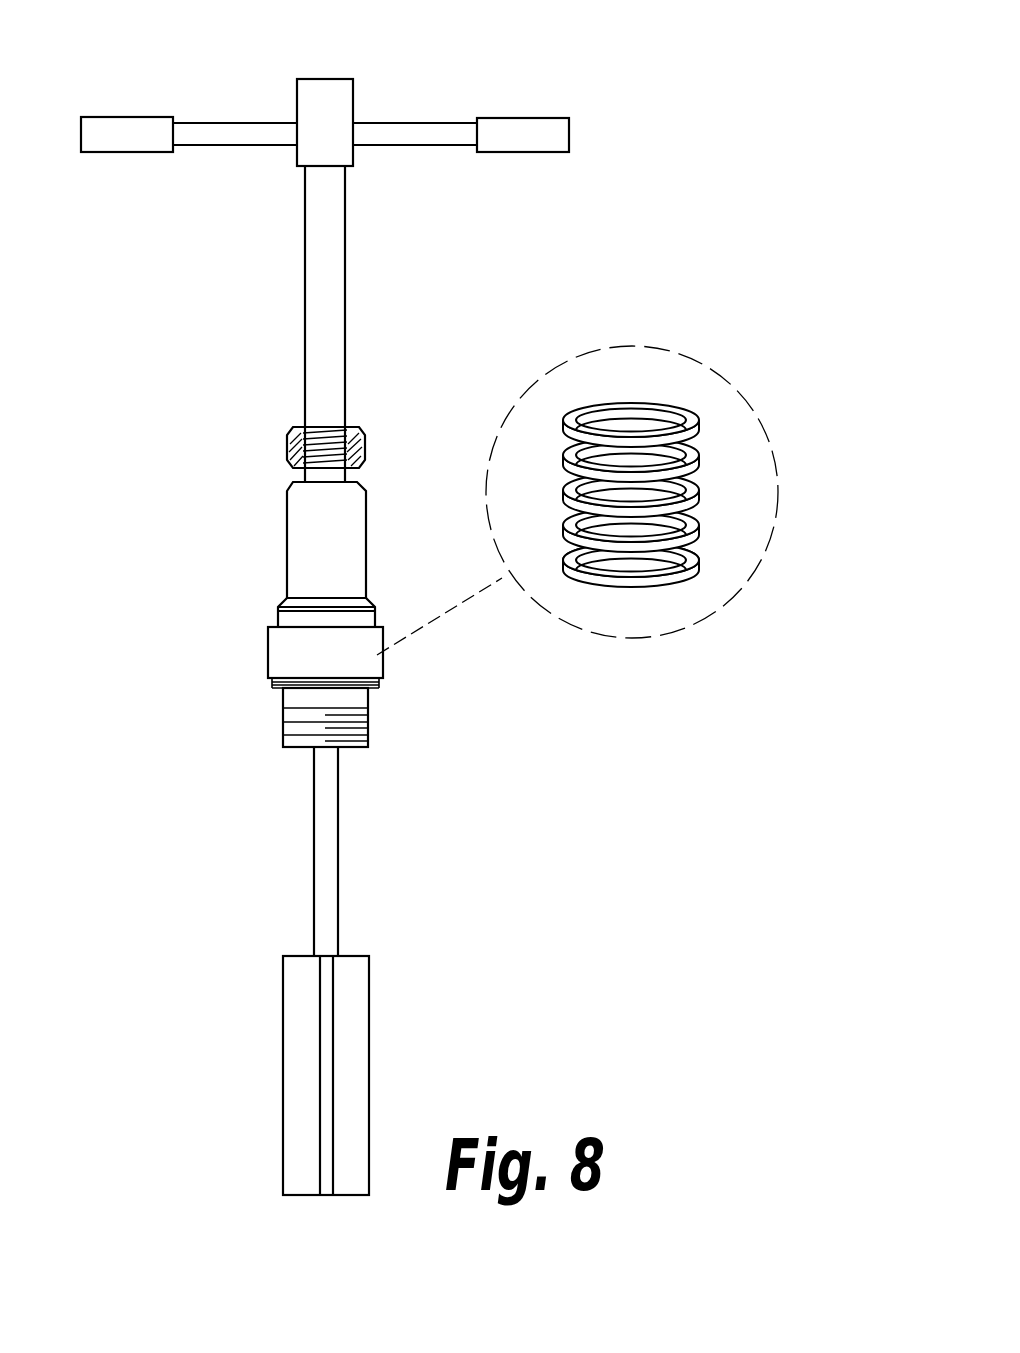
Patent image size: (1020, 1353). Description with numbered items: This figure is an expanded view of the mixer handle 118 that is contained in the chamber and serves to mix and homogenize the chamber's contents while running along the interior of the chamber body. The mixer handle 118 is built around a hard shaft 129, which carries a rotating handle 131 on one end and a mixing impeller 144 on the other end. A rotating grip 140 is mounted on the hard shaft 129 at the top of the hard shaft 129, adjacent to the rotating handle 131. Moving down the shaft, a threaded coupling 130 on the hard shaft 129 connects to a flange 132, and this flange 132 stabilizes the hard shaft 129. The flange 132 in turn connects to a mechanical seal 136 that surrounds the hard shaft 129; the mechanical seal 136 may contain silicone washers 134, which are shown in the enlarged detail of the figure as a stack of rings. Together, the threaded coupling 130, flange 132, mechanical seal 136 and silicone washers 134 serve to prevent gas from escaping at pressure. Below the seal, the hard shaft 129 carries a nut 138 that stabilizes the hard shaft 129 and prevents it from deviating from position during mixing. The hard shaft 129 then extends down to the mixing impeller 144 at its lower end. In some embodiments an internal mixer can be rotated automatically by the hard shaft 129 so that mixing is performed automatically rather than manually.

The mixer handle 118 is at (327, 79).
The rotating handle 131 is at (406, 127).
The rotating grip 140 is at (569, 136).
The hard shaft 129 is at (305, 314).
The threaded coupling 130 is at (287, 443).
The flange 132 is at (287, 535).
The silicone washers 134 is at (700, 458).
The mechanical seal 136 is at (383, 686).
The nut 138 is at (368, 725).
The mixing impeller 144 is at (283, 1062).